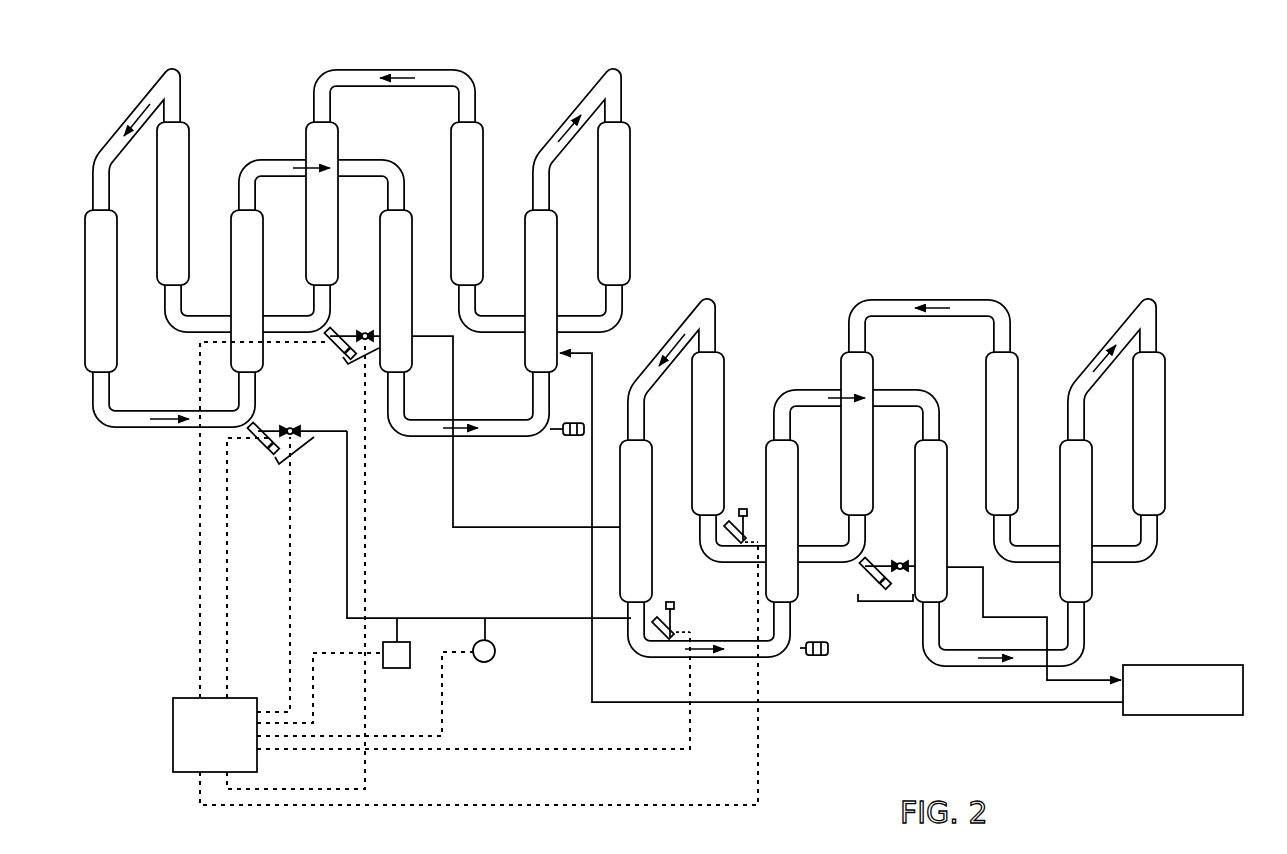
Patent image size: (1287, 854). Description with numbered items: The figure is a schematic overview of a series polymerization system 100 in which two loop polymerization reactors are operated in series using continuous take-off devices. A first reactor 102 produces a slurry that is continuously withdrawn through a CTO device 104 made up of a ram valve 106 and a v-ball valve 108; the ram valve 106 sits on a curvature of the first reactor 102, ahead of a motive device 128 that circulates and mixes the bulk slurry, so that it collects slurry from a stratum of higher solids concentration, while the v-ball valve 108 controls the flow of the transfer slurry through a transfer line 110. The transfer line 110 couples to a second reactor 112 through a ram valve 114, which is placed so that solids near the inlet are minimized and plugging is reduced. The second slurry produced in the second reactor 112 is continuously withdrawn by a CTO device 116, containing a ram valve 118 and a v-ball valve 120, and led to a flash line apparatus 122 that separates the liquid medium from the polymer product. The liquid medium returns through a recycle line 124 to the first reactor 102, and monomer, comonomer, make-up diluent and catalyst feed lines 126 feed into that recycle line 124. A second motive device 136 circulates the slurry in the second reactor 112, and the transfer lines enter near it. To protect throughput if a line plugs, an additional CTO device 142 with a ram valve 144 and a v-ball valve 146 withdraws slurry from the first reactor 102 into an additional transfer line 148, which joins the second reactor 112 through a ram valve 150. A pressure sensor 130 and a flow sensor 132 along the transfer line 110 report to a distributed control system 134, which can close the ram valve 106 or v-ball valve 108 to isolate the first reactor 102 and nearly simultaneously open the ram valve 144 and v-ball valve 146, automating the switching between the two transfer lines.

The series polymerization system 100 is at (838, 90).
The first reactor 102 is at (478, 50).
The CTO device 104 is at (298, 454).
The ram valve 106 is at (266, 452).
The v-ball valve 108 is at (293, 424).
The transfer line 110 is at (345, 578).
The second reactor 112 is at (998, 278).
The ram valve 114 is at (676, 620).
The CTO device 116 is at (888, 603).
The ram valve 118 is at (867, 572).
The v-ball valve 120 is at (902, 560).
The flash line apparatus 122 is at (1203, 665).
The recycle line 124 is at (845, 704).
The feed lines 126 is at (697, 720).
The motive device 128 is at (572, 438).
The pressure sensor 130 is at (412, 653).
The flow sensor 132 is at (493, 662).
The distributed control system (DCS) 134 is at (186, 700).
The motive device 136 is at (817, 657).
The additional CTO device 142 is at (360, 366).
The ram valve 144 is at (330, 347).
The v-ball valve 146 is at (364, 329).
The additional transfer line 148 is at (453, 392).
The ram valve 150 is at (737, 548).